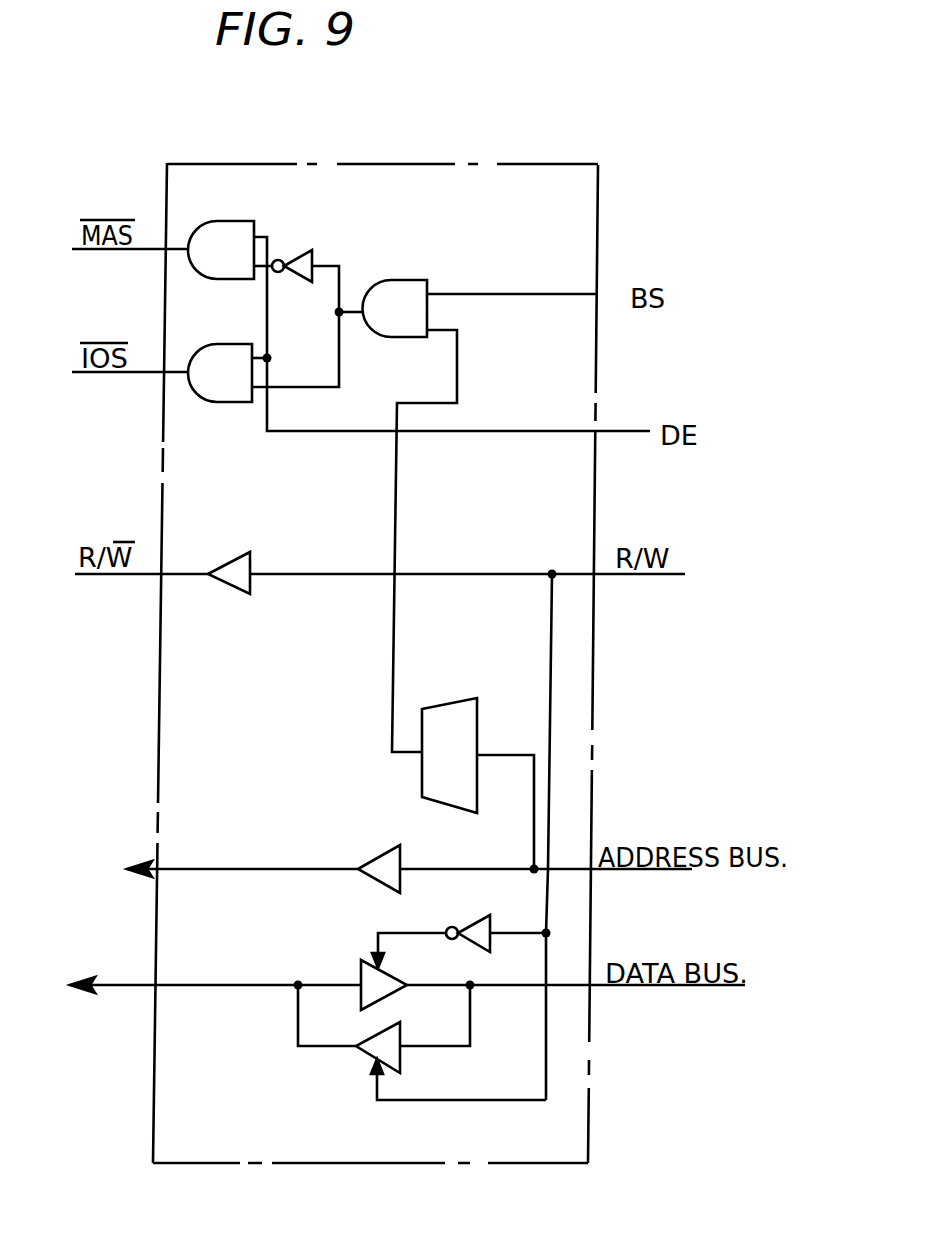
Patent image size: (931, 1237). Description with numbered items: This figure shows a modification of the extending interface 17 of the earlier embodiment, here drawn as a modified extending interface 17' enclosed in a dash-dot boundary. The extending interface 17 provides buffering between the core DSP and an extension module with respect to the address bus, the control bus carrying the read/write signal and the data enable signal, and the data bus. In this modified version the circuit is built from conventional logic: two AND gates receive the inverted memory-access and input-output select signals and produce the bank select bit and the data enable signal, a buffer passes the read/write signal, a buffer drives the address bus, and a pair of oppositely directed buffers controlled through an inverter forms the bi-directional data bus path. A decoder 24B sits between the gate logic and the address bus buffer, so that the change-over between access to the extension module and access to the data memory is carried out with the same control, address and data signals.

The extending interface 17 is at (375, 687).
The extending interface 17' is at (375, 687).
The decoder 24B is at (420, 772).